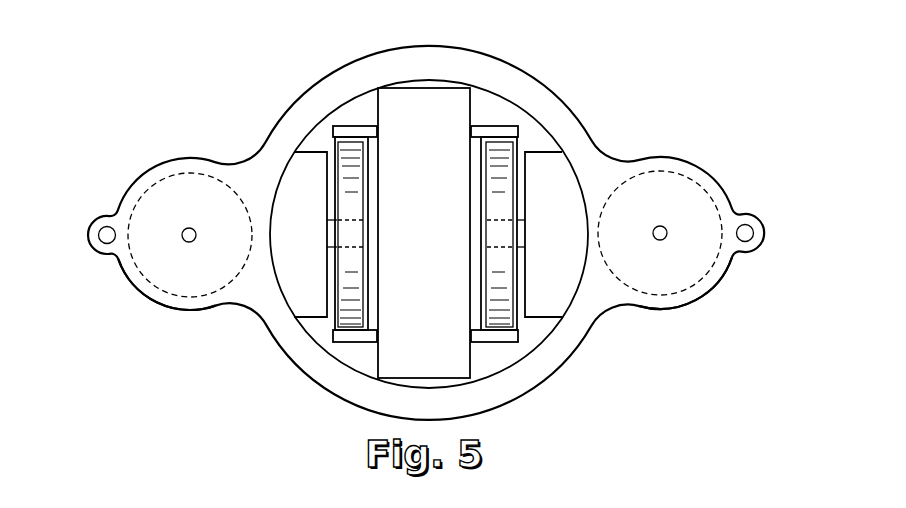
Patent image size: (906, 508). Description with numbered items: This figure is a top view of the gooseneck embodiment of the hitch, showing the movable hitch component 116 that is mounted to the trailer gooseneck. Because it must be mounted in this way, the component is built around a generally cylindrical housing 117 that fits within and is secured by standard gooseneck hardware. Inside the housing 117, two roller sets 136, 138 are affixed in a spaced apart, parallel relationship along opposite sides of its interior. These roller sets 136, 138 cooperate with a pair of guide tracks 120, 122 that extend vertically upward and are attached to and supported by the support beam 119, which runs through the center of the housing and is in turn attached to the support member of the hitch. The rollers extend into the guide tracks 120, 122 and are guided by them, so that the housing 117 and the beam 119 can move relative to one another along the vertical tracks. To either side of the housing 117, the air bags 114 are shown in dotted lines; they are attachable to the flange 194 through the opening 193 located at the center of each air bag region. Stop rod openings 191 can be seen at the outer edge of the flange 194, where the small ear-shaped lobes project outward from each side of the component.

The movable hitch component 116 is at (333, 55).
The cylindrical housing 117 is at (507, 78).
The support beam 119 is at (440, 224).
The guide track 120 is at (352, 124).
The guide track 122 is at (502, 124).
The roller set 138 is at (340, 196).
The roller set 136 is at (510, 193).
The air bag 114 is at (178, 175).
The stop rod opening 191 is at (103, 224).
The opening 193 is at (193, 228).
The flange 194 is at (192, 311).